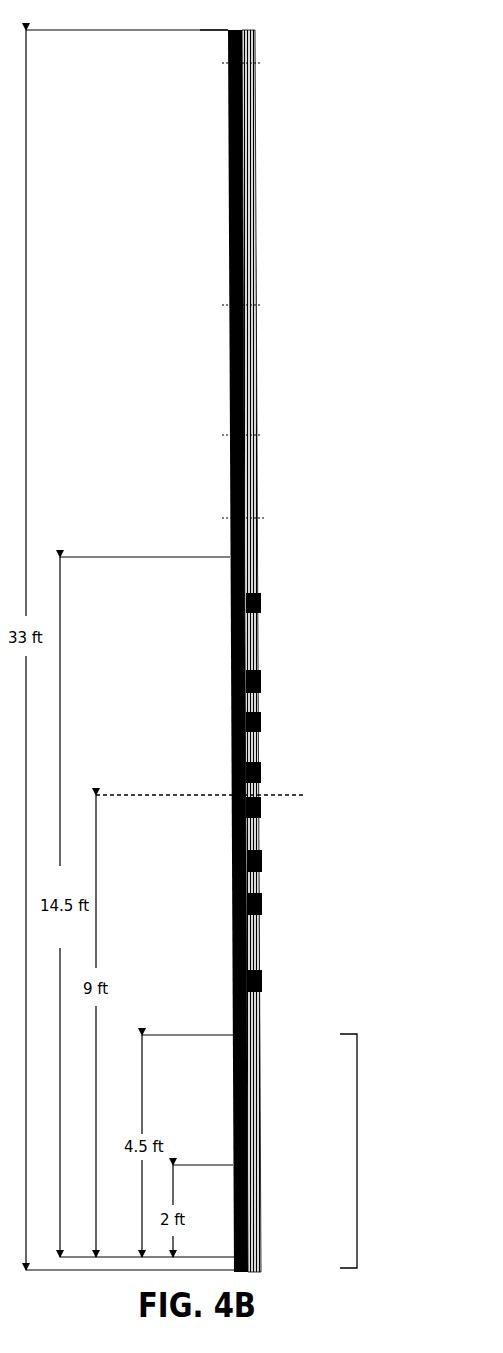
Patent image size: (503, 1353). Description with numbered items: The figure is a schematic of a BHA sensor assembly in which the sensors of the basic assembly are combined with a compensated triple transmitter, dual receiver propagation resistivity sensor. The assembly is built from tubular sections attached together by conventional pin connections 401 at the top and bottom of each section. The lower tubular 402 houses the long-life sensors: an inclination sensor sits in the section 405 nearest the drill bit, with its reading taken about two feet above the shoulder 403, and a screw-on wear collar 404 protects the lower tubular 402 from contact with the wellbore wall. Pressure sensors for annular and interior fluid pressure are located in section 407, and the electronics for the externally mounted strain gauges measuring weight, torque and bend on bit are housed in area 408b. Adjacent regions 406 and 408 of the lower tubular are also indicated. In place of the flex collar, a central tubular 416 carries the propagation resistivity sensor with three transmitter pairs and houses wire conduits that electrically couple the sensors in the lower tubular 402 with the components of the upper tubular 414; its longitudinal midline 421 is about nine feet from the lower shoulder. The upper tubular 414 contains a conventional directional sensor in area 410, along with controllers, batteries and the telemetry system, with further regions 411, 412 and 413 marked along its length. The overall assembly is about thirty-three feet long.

The pin connection 401 is at (258, 1263).
The lower tubular 402 is at (357, 1152).
The shoulder 403 is at (252, 1224).
The screw-on wear collar 404 is at (258, 1186).
The inclination sensor section 405 is at (245, 1156).
The pole section 406 is at (236, 1130).
The pressure sensor section 407 is at (245, 1105).
The pole section 408 is at (252, 1010).
The strain gauge electronics area 408b is at (245, 1076).
The directional sensor area 410 is at (247, 465).
The pole section 411 is at (246, 369).
The pole section 412 is at (244, 240).
The pole section 413 is at (250, 112).
The upper tubular 414 is at (212, 48).
The tubular including a resistivity sensor 416 is at (274, 573).
The height reference line 421 is at (295, 792).